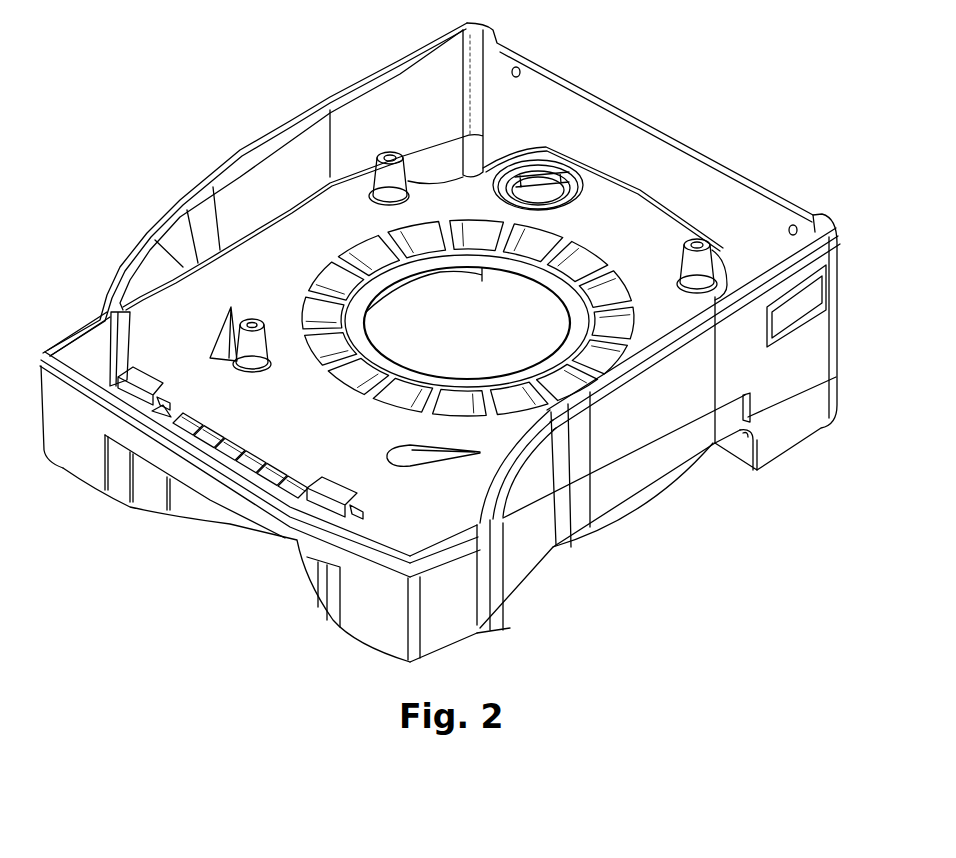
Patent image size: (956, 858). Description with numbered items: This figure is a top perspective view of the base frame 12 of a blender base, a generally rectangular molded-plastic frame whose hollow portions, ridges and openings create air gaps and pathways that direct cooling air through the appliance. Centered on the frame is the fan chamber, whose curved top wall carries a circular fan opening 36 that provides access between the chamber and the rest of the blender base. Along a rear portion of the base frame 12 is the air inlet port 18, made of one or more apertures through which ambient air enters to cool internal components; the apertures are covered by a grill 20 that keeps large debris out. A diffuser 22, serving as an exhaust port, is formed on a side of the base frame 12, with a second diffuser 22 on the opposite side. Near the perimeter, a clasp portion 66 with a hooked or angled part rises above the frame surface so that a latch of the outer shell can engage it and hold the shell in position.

The base frame 12 is at (440, 341).
The air inlet port 18 is at (268, 467).
The grill 20 is at (236, 455).
The diffuser 22 is at (540, 550).
The fan opening 36 is at (516, 297).
The clasp portion 66 is at (333, 488).